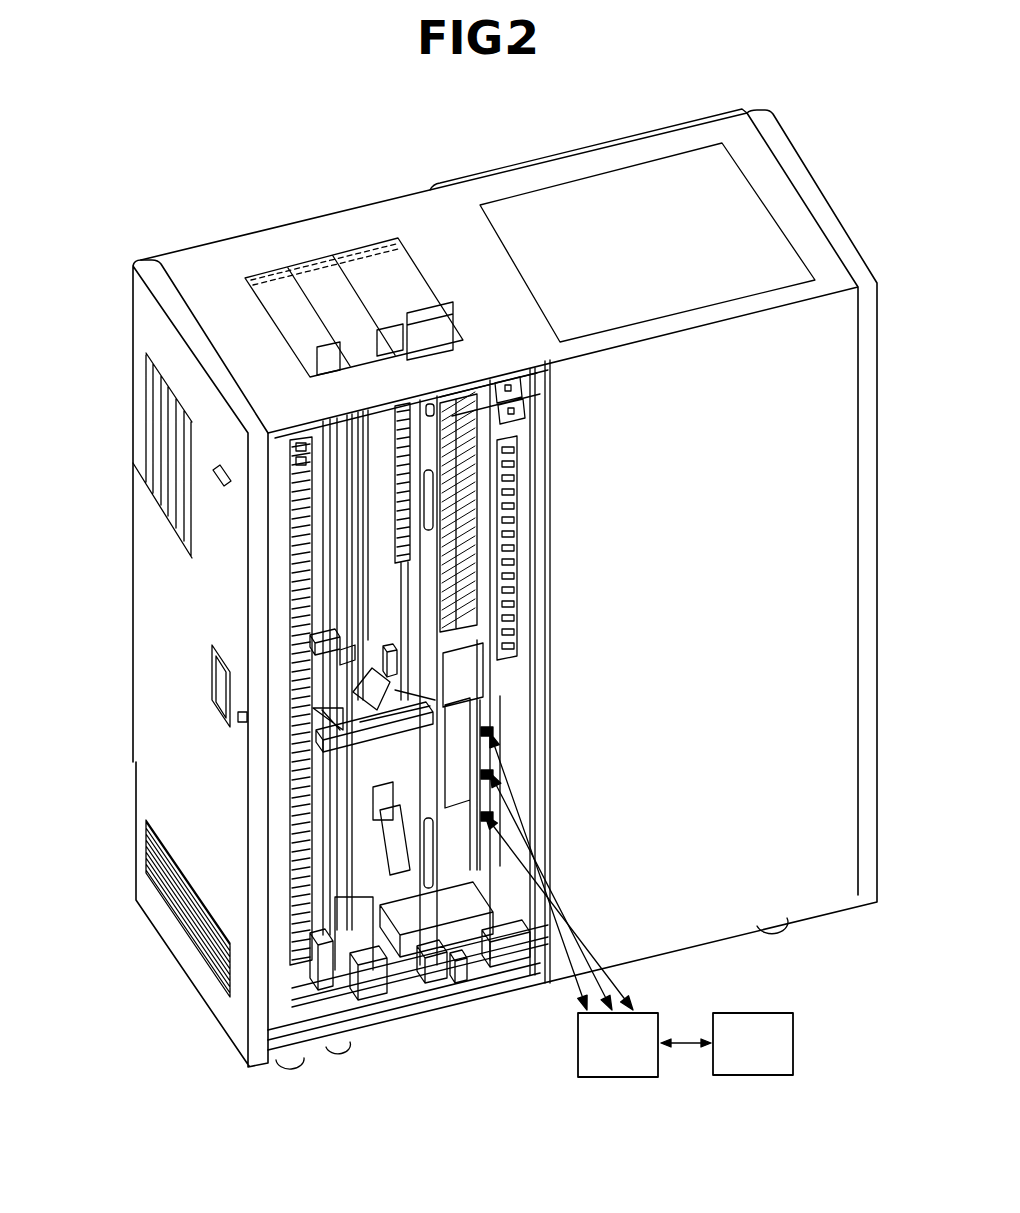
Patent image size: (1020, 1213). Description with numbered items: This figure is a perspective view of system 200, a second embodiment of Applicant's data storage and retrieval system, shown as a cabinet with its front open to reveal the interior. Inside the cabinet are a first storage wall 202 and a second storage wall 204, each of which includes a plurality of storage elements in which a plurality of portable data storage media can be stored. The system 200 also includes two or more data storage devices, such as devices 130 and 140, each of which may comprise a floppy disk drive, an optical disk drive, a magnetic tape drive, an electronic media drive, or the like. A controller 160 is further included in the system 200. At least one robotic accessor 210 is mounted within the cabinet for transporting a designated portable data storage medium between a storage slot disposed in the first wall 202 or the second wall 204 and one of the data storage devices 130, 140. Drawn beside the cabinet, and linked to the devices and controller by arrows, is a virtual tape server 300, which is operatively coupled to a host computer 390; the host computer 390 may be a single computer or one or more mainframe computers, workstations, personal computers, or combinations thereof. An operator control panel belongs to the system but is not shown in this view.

The system 200 is at (318, 1055).
The first storage wall 202 is at (487, 485).
The second storage wall 204 is at (286, 568).
The robotic accessor 210 is at (335, 720).
The data storage device 130 is at (483, 757).
The data storage device 140 is at (483, 803).
The controller 160 is at (490, 715).
The virtual tape server 300 is at (598, 1061).
The host computer 390 is at (731, 1060).